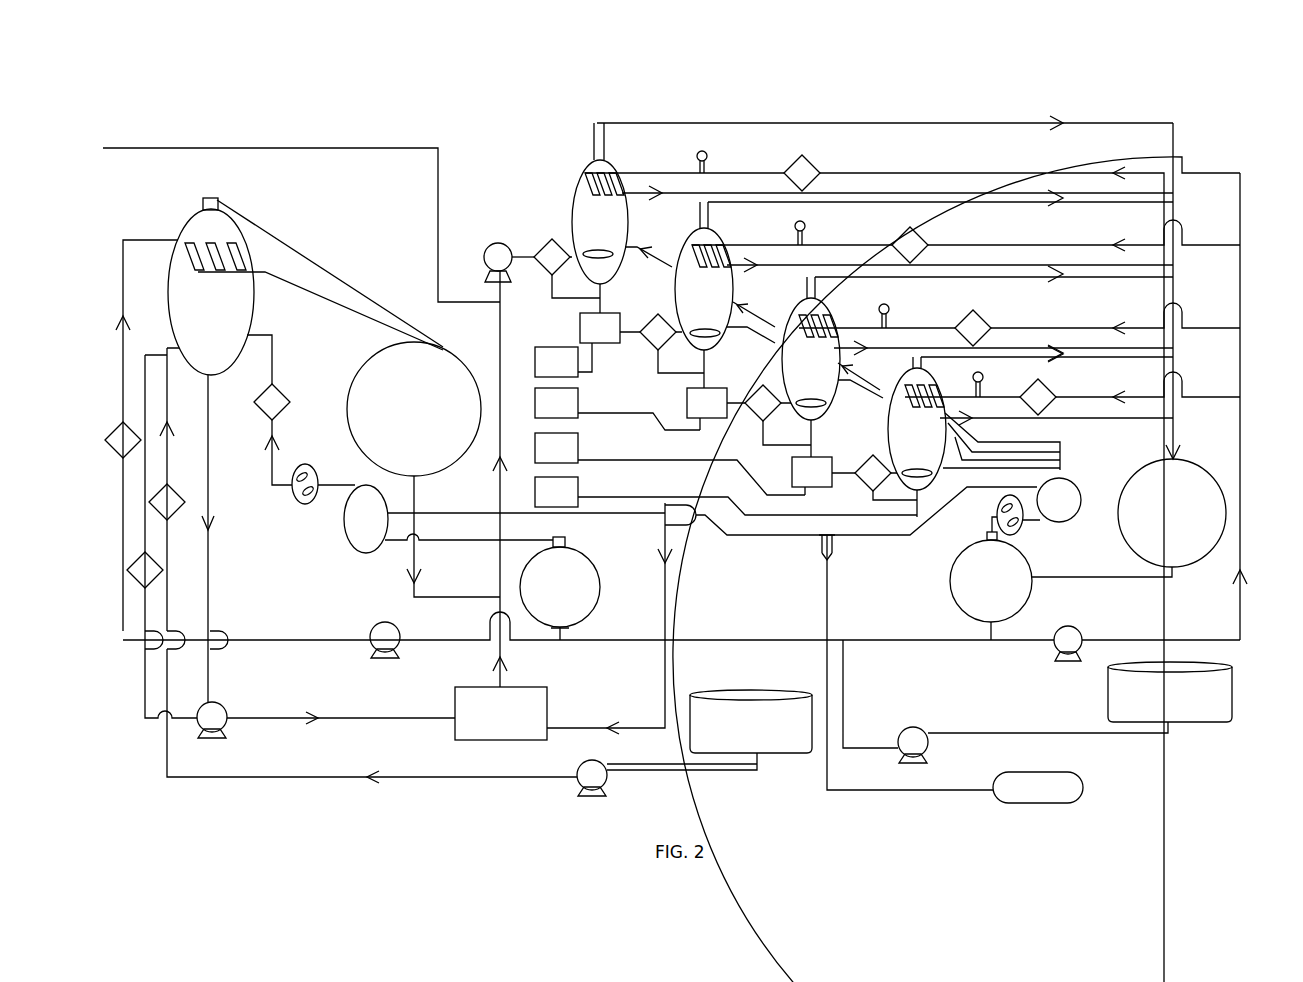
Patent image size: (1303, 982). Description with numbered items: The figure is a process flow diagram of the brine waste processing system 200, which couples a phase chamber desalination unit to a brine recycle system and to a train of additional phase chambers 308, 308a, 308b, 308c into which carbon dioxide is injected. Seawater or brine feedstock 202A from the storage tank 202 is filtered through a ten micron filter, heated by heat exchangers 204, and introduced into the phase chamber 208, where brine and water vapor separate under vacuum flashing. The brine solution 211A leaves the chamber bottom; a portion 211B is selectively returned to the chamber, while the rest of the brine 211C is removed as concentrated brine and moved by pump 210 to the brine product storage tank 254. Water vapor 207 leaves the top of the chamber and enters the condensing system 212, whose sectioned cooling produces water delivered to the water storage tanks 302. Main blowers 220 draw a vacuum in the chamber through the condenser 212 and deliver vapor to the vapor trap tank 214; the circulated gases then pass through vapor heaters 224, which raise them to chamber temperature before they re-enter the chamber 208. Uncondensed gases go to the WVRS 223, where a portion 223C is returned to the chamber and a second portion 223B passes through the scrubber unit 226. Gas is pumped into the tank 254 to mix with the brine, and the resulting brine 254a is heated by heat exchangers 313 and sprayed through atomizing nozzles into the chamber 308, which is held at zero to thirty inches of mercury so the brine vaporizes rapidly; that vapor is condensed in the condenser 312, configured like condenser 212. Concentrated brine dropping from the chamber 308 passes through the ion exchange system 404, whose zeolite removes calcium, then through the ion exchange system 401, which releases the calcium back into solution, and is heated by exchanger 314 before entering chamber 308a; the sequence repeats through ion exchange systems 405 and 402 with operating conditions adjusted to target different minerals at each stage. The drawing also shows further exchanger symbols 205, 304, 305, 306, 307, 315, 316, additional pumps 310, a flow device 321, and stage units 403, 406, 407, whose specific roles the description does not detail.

The carbon dioxide capture system 200 is at (176, 116).
The storage tank 202 is at (765, 736).
The seawater or brine feedstock 202A is at (507, 771).
The heat exchanger 204 is at (207, 480).
The heat exchanger 205 is at (120, 480).
The water vapor 207 is at (342, 261).
The phase chamber 208 is at (232, 320).
The pump 210 is at (230, 760).
The brine solution 211A is at (260, 578).
The returned brine portion 211B is at (138, 688).
The concentrated brine path 211C is at (405, 718).
The condensing system 212 is at (430, 415).
The vapor trap tank 214 is at (382, 527).
The main blower 220 is at (324, 530).
The WVRS 223 is at (479, 538).
The second portion of uncondensed gases 223B is at (640, 541).
The returned portion of uncondensed gases 223C is at (325, 350).
The vapor heater 224 is at (330, 402).
The scrubber unit 226 is at (1055, 800).
The brine product storage tank 254 is at (519, 725).
The brine from brine product tank 254a is at (522, 248).
The water storage tank 302 is at (1185, 705).
The heat exchanger 304 is at (852, 166).
The heat exchanger 305 is at (962, 240).
The heat exchanger 306 is at (1024, 321).
The heat exchanger 307 is at (1090, 390).
The phase chamber 308 is at (617, 232).
The phase chamber 308a is at (726, 303).
The phase chamber 308b is at (832, 381).
The phase chamber 308c is at (941, 450).
The pump 310 is at (483, 255).
The condenser 312 is at (1185, 521).
The heat exchanger 313 is at (564, 232).
The heat exchanger 314 is at (669, 311).
The heat exchanger 315 is at (775, 381).
The heat exchanger 316 is at (885, 451).
The valve 321 is at (990, 513).
The ion exchange system 401 is at (609, 342).
The ion exchange system 402 is at (716, 409).
The control unit 403 is at (823, 476).
The ion exchange system 404 is at (556, 362).
The ion exchange system 405 is at (617, 409).
The control unit 406 is at (670, 464).
The control unit 407 is at (726, 496).